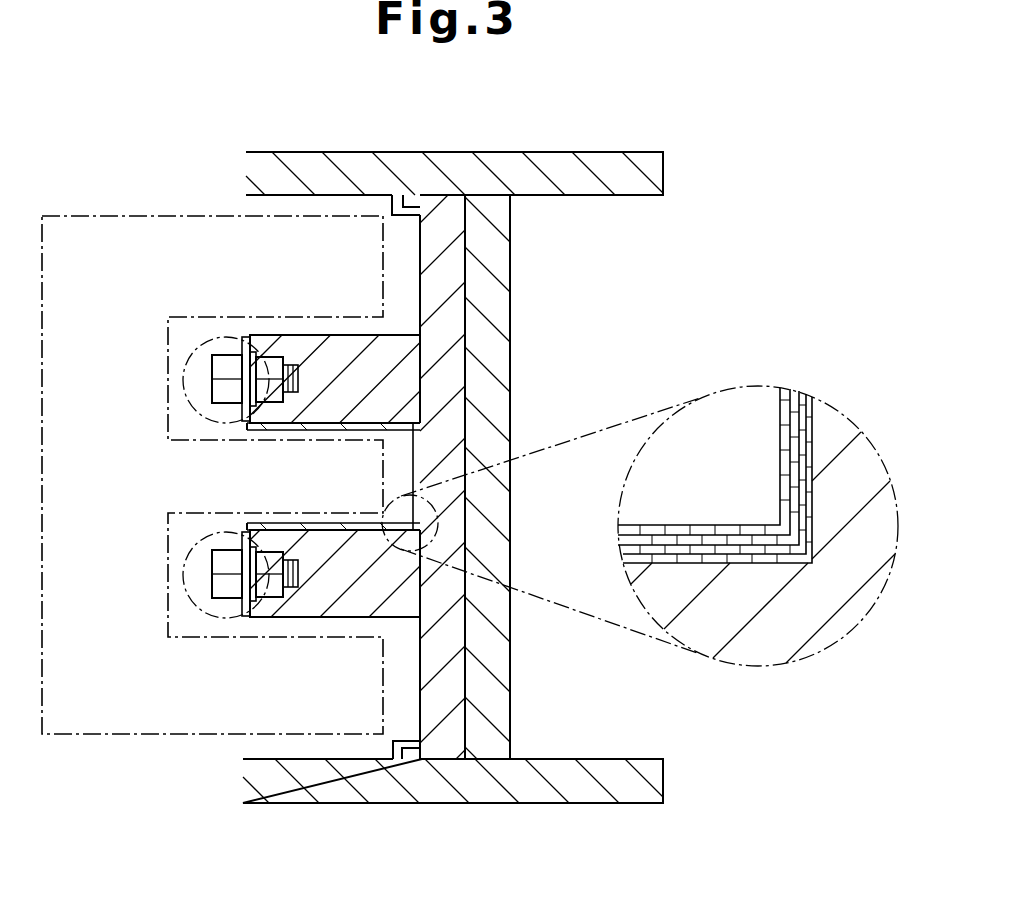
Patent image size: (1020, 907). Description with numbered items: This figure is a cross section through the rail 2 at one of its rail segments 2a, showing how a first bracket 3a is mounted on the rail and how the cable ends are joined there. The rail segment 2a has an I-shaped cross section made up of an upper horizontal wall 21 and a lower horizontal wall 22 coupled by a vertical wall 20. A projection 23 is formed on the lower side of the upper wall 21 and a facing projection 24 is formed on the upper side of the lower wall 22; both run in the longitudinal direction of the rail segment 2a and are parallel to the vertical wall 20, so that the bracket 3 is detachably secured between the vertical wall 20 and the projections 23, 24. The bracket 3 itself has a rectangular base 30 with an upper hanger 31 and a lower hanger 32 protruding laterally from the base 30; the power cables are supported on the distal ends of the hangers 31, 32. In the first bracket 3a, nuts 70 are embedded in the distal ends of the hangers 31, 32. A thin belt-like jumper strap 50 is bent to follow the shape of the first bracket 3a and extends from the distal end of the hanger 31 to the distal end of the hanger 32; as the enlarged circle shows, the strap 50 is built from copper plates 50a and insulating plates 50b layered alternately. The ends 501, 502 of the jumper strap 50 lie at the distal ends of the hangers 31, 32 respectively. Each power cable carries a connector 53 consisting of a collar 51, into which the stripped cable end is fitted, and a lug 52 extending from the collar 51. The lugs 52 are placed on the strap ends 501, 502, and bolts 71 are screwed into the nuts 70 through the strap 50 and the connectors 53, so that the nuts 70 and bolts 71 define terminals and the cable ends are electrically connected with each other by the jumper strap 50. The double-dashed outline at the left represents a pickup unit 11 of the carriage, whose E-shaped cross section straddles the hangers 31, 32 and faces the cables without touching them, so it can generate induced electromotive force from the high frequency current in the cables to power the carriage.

The rail 2 is at (549, 106).
The rail segment 2a is at (487, 152).
The vertical wall 20 is at (500, 262).
The upper horizontal wall 21 is at (643, 153).
The lower horizontal wall 22 is at (583, 790).
The projection 23 is at (394, 200).
The projection 24 is at (394, 762).
The bracket 3 is at (445, 320).
The first bracket 3a is at (516, 477).
The base 30 is at (445, 667).
The upper hanger 31 is at (352, 345).
The lower hanger 32 is at (353, 608).
The jumper strap 50 is at (413, 477).
The copper plate 50a is at (782, 432).
The insulating plate 50b is at (782, 500).
The end of jumper strap 501 is at (251, 428).
The end of jumper strap 502 is at (257, 620).
The collar 51 is at (244, 337).
The lug 52 is at (246, 345).
The connector 53 is at (186, 318).
The nut 70 is at (274, 350).
The bolt 71 is at (218, 390).
The pickup unit 11 is at (101, 736).